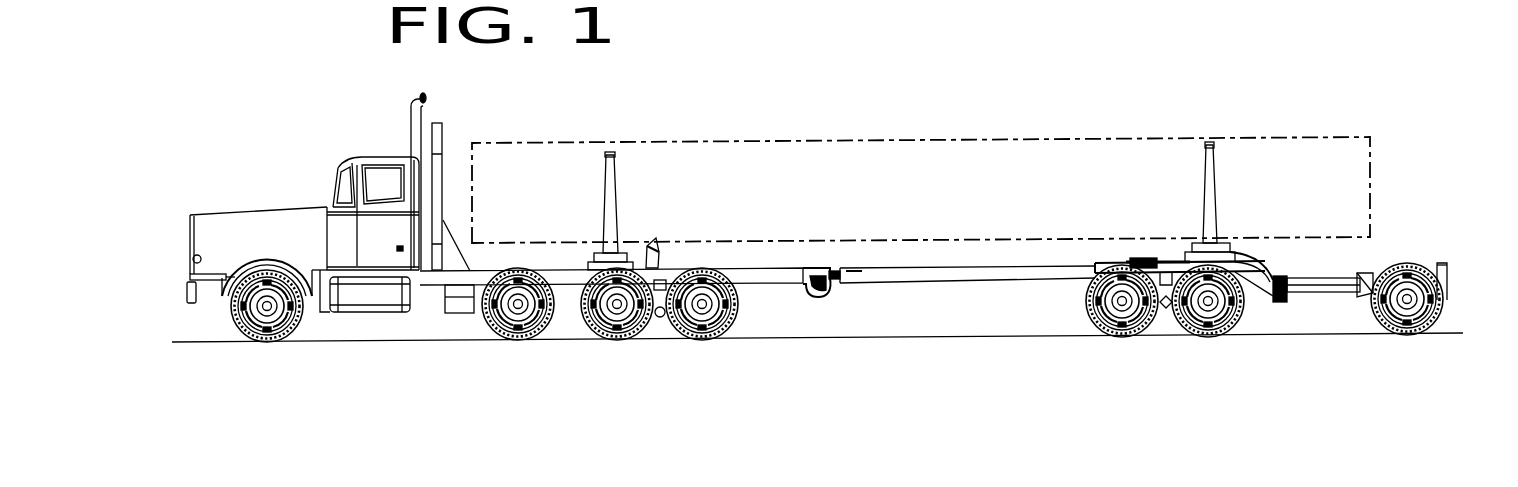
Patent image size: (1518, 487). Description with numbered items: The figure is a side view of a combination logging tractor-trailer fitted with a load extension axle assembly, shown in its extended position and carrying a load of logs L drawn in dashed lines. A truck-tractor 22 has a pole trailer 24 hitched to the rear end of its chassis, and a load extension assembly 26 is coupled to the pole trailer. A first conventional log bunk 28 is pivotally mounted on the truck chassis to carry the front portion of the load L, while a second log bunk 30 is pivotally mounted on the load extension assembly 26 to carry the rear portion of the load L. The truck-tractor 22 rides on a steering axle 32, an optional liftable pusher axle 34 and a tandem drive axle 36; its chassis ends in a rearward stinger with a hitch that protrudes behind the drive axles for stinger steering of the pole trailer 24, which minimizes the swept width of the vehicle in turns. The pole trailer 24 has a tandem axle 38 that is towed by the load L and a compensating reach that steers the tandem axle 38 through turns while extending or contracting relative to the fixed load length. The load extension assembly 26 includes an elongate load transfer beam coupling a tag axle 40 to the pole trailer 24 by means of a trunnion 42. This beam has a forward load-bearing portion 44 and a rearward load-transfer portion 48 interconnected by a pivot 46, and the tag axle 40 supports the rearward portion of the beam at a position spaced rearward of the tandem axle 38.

The load of logs L is at (930, 137).
The truck-tractor 22 is at (370, 158).
The pole trailer 24 is at (973, 280).
The load extension assembly 26 is at (1278, 259).
The first log bunk 28 is at (603, 197).
The second log bunk 30 is at (1215, 197).
The steering axle 32 is at (233, 336).
The liftable pusher axle 34 is at (513, 340).
The tandem drive axle 36 is at (728, 333).
The tandem axle 38 is at (1123, 337).
The tag axle 40 is at (1433, 333).
The trunnion 42 is at (1163, 260).
The load-bearing portion 44 is at (1250, 255).
The pivot 46 is at (1278, 300).
The load-transfer portion 48 is at (1338, 276).